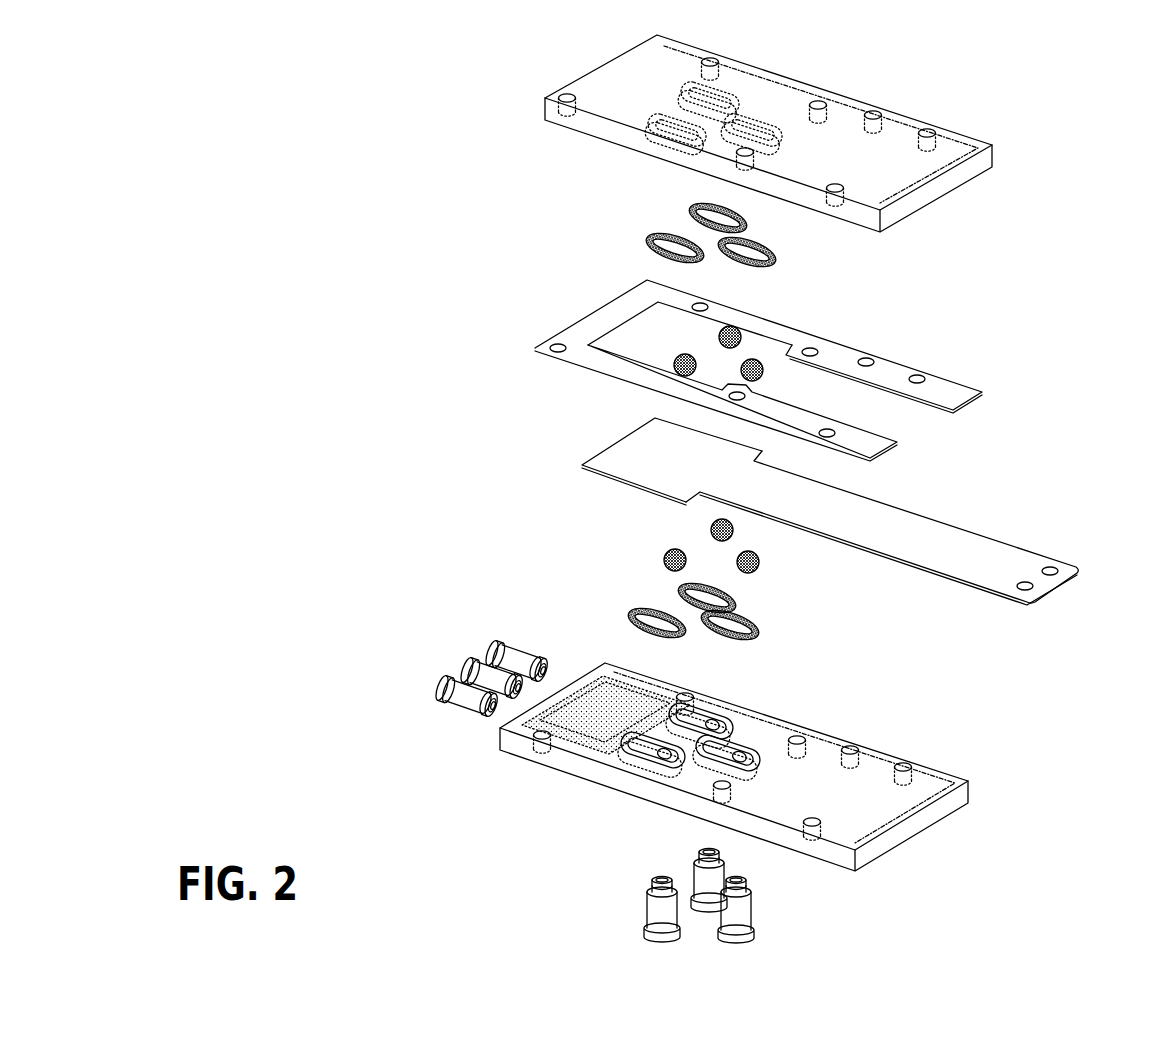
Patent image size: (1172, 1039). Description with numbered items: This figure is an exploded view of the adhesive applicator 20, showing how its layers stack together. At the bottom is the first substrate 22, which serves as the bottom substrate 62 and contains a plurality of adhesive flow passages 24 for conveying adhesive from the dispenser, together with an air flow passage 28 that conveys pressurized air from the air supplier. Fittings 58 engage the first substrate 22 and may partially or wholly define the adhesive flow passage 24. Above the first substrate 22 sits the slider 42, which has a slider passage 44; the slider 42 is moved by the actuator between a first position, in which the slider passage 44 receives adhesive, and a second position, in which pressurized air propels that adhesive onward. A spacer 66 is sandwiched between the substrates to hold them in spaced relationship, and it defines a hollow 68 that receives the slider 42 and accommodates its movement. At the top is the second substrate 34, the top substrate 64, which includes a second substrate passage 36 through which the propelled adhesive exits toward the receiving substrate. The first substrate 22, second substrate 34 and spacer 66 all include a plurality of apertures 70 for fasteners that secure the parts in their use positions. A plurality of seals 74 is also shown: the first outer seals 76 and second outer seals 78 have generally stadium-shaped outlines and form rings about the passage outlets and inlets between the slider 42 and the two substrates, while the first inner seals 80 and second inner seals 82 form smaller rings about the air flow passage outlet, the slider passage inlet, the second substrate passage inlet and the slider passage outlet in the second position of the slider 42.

The adhesive applicator 20 is at (1078, 116).
The first substrate 22 is at (872, 778).
The adhesive flow passage 24 is at (652, 730).
The air flow passage 28 is at (760, 764).
The second substrate 34 is at (849, 104).
The second substrate passage 36 is at (655, 128).
The slider 42 is at (986, 556).
The slider passage 44 is at (721, 476).
The fitting 58 is at (490, 653).
The bottom substrate 62 is at (883, 807).
The top substrate 64 is at (906, 178).
The spacer 66 is at (948, 384).
The hollow 68 is at (657, 310).
The apertures 70 is at (877, 108).
The seals 74 is at (621, 412).
The first outer seal 76 is at (642, 621).
The second outer seal 78 is at (641, 240).
The first inner seal 80 is at (664, 560).
The second inner seal 82 is at (673, 362).